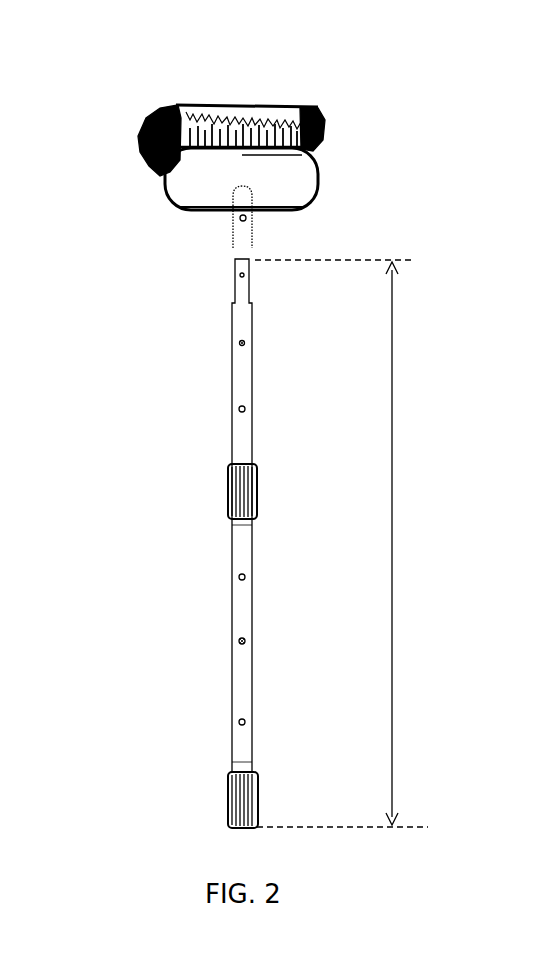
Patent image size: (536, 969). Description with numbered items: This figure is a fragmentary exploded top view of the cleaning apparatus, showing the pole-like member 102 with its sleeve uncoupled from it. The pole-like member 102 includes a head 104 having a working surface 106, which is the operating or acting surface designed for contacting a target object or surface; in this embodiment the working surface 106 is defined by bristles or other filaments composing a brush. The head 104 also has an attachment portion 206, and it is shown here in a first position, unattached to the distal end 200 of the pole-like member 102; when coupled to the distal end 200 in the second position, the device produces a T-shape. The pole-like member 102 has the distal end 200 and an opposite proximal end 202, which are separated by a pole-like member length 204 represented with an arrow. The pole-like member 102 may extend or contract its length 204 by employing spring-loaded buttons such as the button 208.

The pole-like member 102 is at (245, 613).
The head 104 is at (297, 178).
The working surface 106 is at (294, 99).
The distal end 200 is at (211, 262).
The proximal end 202 is at (208, 827).
The pole-like member length 204 is at (392, 493).
The attachment portion 206 is at (245, 237).
The spring-loaded button 208 is at (242, 343).